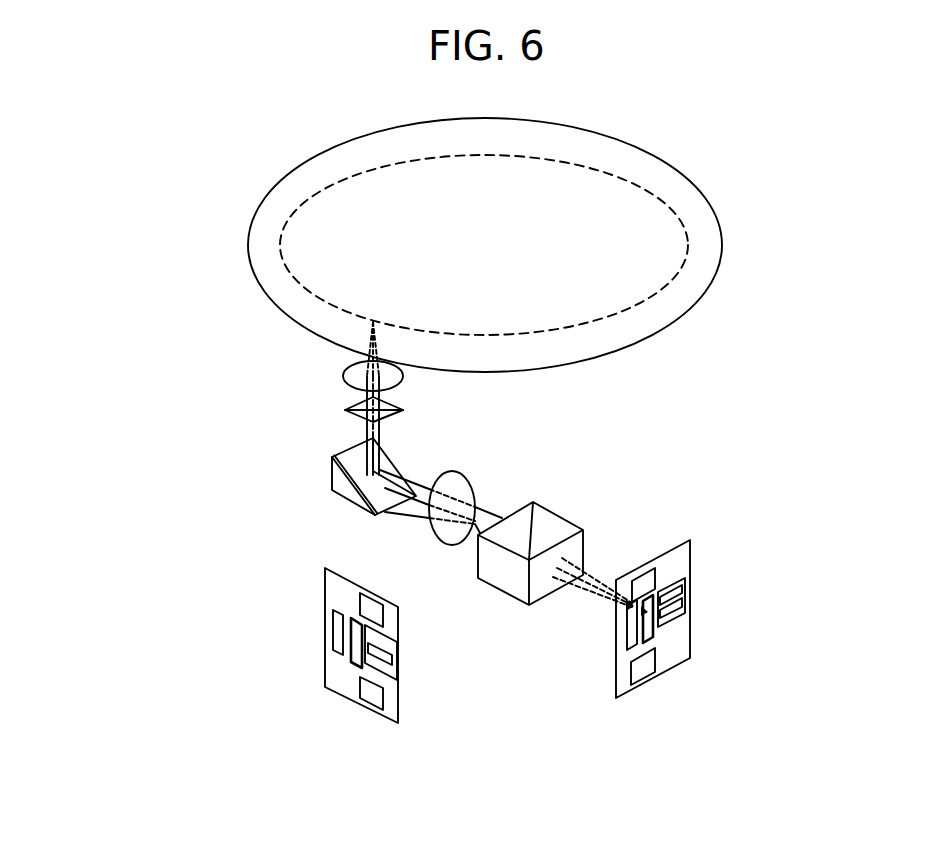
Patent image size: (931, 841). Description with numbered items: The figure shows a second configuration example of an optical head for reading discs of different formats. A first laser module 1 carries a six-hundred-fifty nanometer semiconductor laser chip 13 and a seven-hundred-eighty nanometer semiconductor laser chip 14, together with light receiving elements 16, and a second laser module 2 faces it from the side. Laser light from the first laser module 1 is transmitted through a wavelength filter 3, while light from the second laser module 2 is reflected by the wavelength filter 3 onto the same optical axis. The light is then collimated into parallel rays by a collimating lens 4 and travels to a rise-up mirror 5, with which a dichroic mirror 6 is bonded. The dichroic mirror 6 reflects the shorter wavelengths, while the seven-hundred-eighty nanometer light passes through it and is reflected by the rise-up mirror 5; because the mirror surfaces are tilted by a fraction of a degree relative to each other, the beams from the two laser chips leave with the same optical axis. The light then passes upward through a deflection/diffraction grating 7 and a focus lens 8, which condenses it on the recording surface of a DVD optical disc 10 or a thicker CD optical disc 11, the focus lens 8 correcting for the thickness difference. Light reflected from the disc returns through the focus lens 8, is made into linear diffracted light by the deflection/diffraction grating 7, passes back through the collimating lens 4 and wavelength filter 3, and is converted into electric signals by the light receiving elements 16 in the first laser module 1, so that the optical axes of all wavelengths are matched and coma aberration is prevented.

The first laser module 1 is at (696, 615).
The second laser module 2 is at (393, 703).
The wavelength filter 3 is at (555, 522).
The collimating lens 4 is at (452, 480).
The rise-up mirror 5 is at (342, 502).
The dichroic mirror 6 is at (363, 507).
The deflection/diffraction grating 7 is at (345, 411).
The focus lens 8 is at (345, 378).
The DVD optical disc 10 is at (535, 245).
The CD optical disc 11 is at (690, 283).
The semiconductor laser chip 13 is at (686, 587).
The semiconductor laser chip 14 is at (687, 602).
The light receiving elements 16 is at (636, 578).